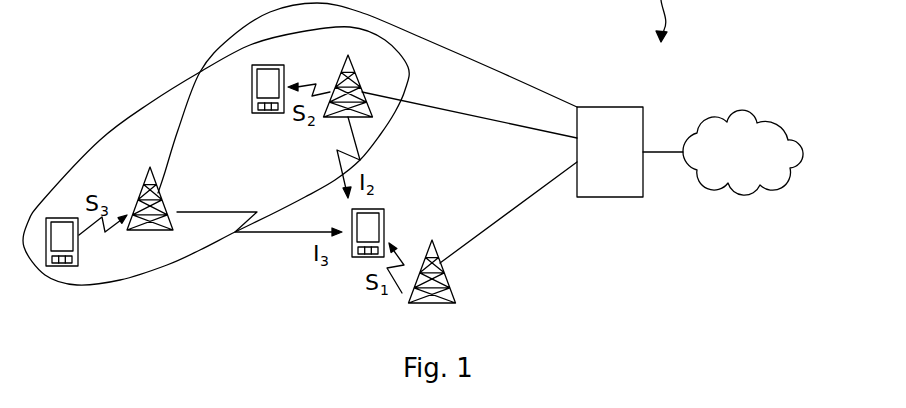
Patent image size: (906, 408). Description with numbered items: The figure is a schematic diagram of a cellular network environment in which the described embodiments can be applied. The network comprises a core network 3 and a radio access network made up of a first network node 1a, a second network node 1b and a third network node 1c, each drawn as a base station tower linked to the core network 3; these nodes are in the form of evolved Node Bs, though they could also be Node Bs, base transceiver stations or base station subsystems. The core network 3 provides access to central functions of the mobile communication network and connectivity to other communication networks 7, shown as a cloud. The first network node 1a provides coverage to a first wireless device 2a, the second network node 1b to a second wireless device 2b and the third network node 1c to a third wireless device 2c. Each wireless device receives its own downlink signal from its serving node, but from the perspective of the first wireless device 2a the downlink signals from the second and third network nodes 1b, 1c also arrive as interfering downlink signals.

The first network node 1a is at (450, 287).
The second network node 1b is at (388, 67).
The third network node 1c is at (141, 194).
The first wireless device 2a is at (385, 211).
The second wireless device 2b is at (285, 76).
The third wireless device 2c is at (79, 257).
The core network 3 is at (603, 162).
The other communication networks 7 is at (736, 162).